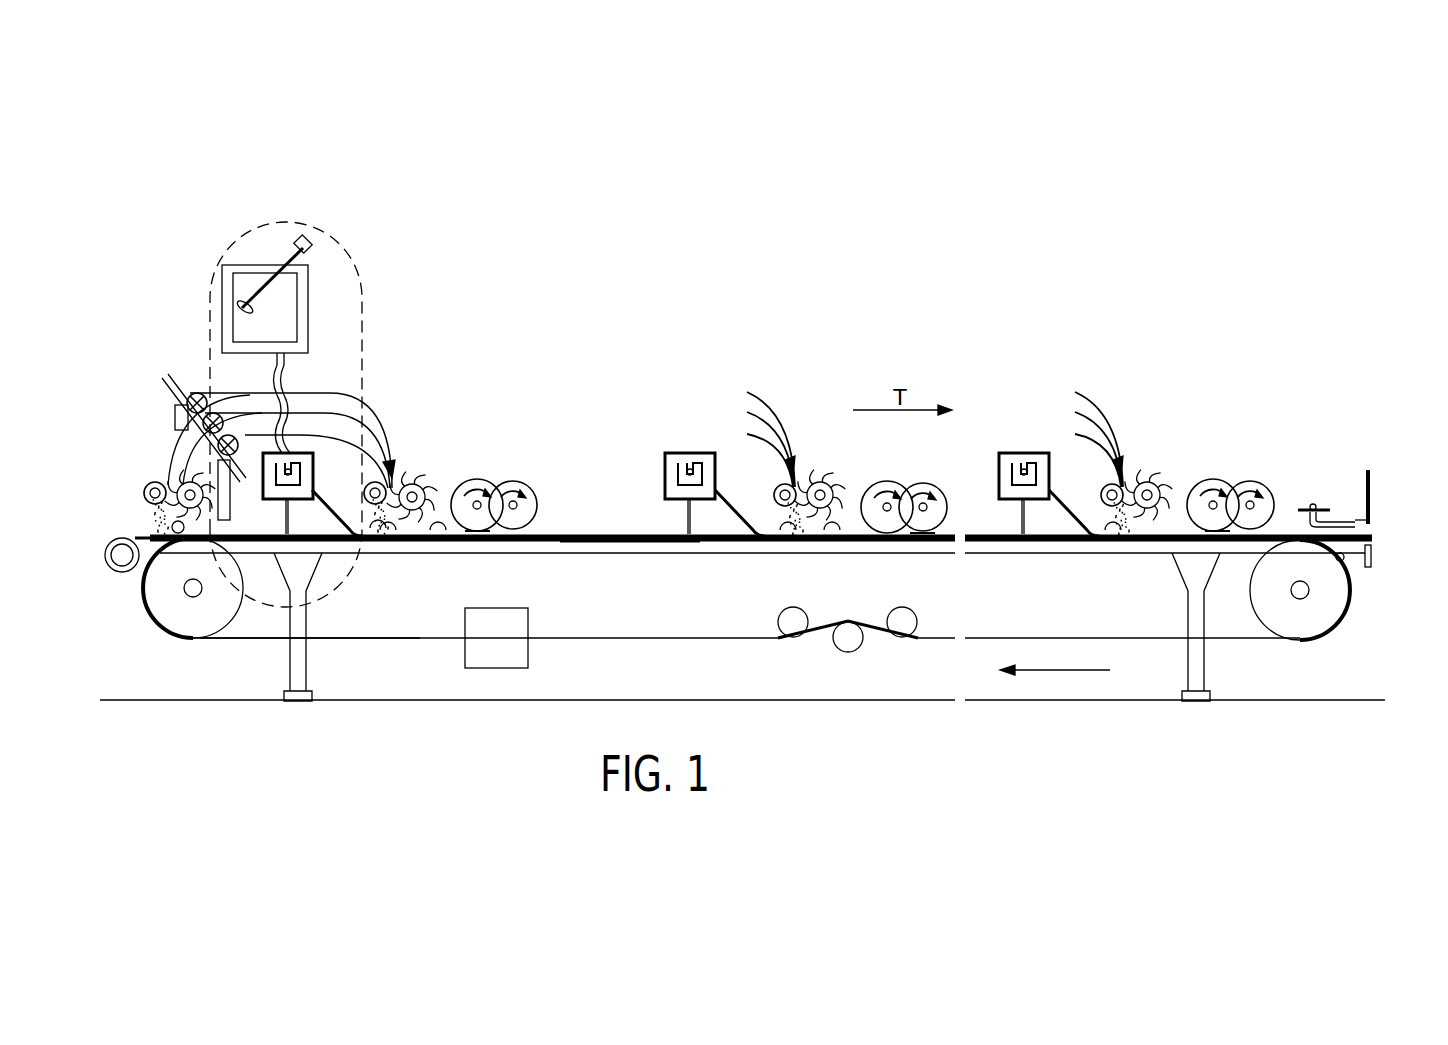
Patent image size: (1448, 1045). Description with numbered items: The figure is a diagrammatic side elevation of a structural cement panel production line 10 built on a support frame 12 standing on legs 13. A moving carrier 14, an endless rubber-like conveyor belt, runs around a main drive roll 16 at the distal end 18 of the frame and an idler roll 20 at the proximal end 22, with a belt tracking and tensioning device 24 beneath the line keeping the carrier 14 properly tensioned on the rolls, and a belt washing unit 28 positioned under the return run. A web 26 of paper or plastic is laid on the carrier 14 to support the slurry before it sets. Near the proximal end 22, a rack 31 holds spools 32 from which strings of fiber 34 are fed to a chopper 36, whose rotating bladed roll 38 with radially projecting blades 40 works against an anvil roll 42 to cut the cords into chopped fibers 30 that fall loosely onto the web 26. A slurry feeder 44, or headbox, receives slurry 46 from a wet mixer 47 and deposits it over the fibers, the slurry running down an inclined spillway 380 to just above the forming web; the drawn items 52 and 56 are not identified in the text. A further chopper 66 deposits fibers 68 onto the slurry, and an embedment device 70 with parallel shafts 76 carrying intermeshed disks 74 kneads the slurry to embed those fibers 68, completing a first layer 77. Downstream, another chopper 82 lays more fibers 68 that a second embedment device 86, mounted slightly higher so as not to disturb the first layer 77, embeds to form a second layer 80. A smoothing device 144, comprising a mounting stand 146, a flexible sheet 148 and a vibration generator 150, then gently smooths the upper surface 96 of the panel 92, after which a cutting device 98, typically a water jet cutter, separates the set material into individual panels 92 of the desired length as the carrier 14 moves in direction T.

The structural panel production line 10 is at (705, 262).
The support frame 12 is at (627, 553).
The legs 13 is at (305, 658).
The moving carrier 14 is at (228, 638).
The main drive roll 16 is at (1318, 622).
The distal end 18 is at (1335, 568).
The idler roll 20 is at (168, 612).
The proximal end 22 is at (150, 560).
The belt tracking and/or tensioning device 24 is at (840, 652).
The web 26 is at (148, 538).
The belt washing unit 28 is at (470, 648).
The chopped fibers 30 is at (160, 515).
The rack 31 is at (160, 378).
The spools 32 is at (232, 400).
The string of fiber 34 is at (333, 393).
The chopper 36 is at (176, 458).
The bladed roll 38 is at (208, 492).
The blades 40 is at (182, 538).
The anvil roll 42 is at (150, 484).
The slurry feeder 44 is at (1024, 440).
The slurry 46 is at (288, 290).
The wet mixer 47 is at (242, 246).
The dispensing head 52 is at (300, 452).
The feed pipe 56 is at (290, 385).
The chopper 66 is at (397, 460).
The fibers 68 is at (390, 542).
The embedment device 70 is at (493, 468).
The disks 74 is at (522, 492).
The shafts 76 is at (478, 542).
The first layer 77 is at (610, 533).
The second layer 80 is at (828, 545).
The chopper 82 is at (800, 440).
The second embedment device 86 is at (900, 472).
The panel 92 is at (1366, 552).
The upper surface 96 is at (1360, 520).
The cutting device 98 is at (1370, 470).
The smoothing device 144 is at (1312, 462).
The mounting stand 146 is at (1313, 504).
The flexible sheet 148 is at (1330, 512).
The vibration generator 150 is at (1368, 476).
The inclined spillway 380 is at (338, 560).